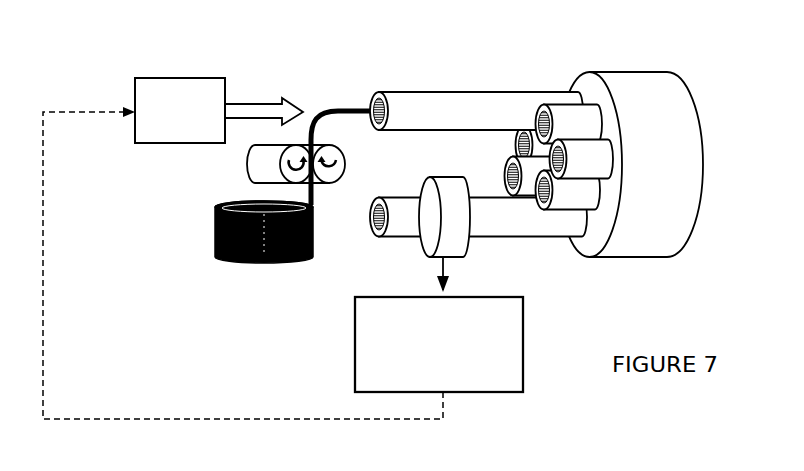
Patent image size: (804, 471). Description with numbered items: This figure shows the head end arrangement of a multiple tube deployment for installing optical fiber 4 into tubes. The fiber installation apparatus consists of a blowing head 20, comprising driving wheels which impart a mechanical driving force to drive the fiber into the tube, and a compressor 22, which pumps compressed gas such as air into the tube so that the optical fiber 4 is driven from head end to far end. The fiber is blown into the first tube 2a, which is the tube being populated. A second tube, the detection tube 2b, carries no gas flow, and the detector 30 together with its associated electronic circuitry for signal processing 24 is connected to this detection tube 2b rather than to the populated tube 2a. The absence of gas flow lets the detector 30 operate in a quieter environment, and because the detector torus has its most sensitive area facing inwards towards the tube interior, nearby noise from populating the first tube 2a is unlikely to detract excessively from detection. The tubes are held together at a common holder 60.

The first tube 2a is at (447, 90).
The detection tube 2b is at (548, 230).
The optical fiber 4 is at (212, 233).
The blowing head 20 is at (246, 157).
The compressor 22 is at (180, 110).
The electronic circuitry for signal processing 24 is at (439, 344).
The detector 30 is at (418, 249).
The tube bundle holder 60 is at (613, 68).